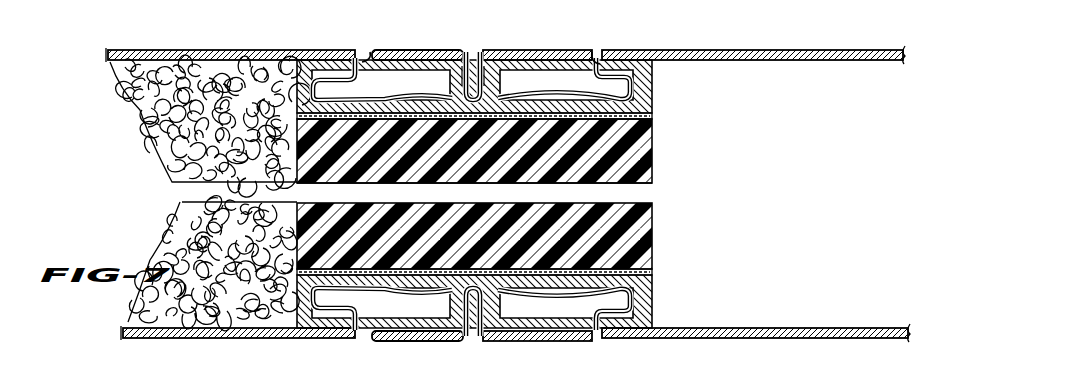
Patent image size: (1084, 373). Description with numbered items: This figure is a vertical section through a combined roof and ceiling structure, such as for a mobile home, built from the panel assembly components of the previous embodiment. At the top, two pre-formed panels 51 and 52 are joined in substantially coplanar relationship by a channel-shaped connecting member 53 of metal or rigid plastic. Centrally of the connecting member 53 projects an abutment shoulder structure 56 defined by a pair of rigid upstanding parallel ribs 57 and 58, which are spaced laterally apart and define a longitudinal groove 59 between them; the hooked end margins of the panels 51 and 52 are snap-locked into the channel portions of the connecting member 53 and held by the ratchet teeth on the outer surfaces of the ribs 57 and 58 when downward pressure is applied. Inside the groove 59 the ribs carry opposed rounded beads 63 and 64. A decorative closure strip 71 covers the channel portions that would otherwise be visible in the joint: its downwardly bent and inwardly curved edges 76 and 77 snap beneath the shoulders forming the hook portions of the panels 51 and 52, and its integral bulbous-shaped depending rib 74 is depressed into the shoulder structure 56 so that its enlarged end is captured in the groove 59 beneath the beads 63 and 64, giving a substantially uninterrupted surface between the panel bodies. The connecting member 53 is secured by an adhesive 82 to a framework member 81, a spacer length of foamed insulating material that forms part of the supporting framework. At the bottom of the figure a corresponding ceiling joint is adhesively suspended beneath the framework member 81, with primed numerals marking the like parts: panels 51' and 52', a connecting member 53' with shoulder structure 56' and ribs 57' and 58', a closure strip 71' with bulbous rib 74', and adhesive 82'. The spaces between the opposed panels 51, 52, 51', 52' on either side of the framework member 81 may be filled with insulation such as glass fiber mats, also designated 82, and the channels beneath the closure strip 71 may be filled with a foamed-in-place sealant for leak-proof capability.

The panel 51 is at (210, 126).
The panel 52 is at (505, 42).
The connecting member 53 is at (502, 86).
The abutment shoulder structure 56 is at (461, 50).
The upstanding rib 57 is at (384, 79).
The upstanding rib 58 is at (560, 49).
The longitudinal groove 59 is at (474, 151).
The rounded bead 63 is at (464, 52).
The rounded bead 64 is at (490, 62).
The closure strip 71 is at (482, 34).
The bulbous-shaped depending rib 74 is at (474, 151).
The downwardly bent and inwardly curved edge 76 is at (371, 50).
The downwardly bent and inwardly curved edge 77 is at (597, 79).
The adhesive 82 is at (386, 122).
The framework member 81 is at (657, 226).
The panel 51' is at (213, 263).
The panel 52' is at (515, 318).
The connecting member 53' is at (505, 301).
The abutment shoulder structure 56' is at (488, 330).
The upstanding rib 57' is at (382, 309).
The upstanding rib 58' is at (564, 309).
The closure strip 71' is at (417, 352).
The bulbous-shaped depending rib 74' is at (512, 352).
The adhesive 82' is at (500, 268).